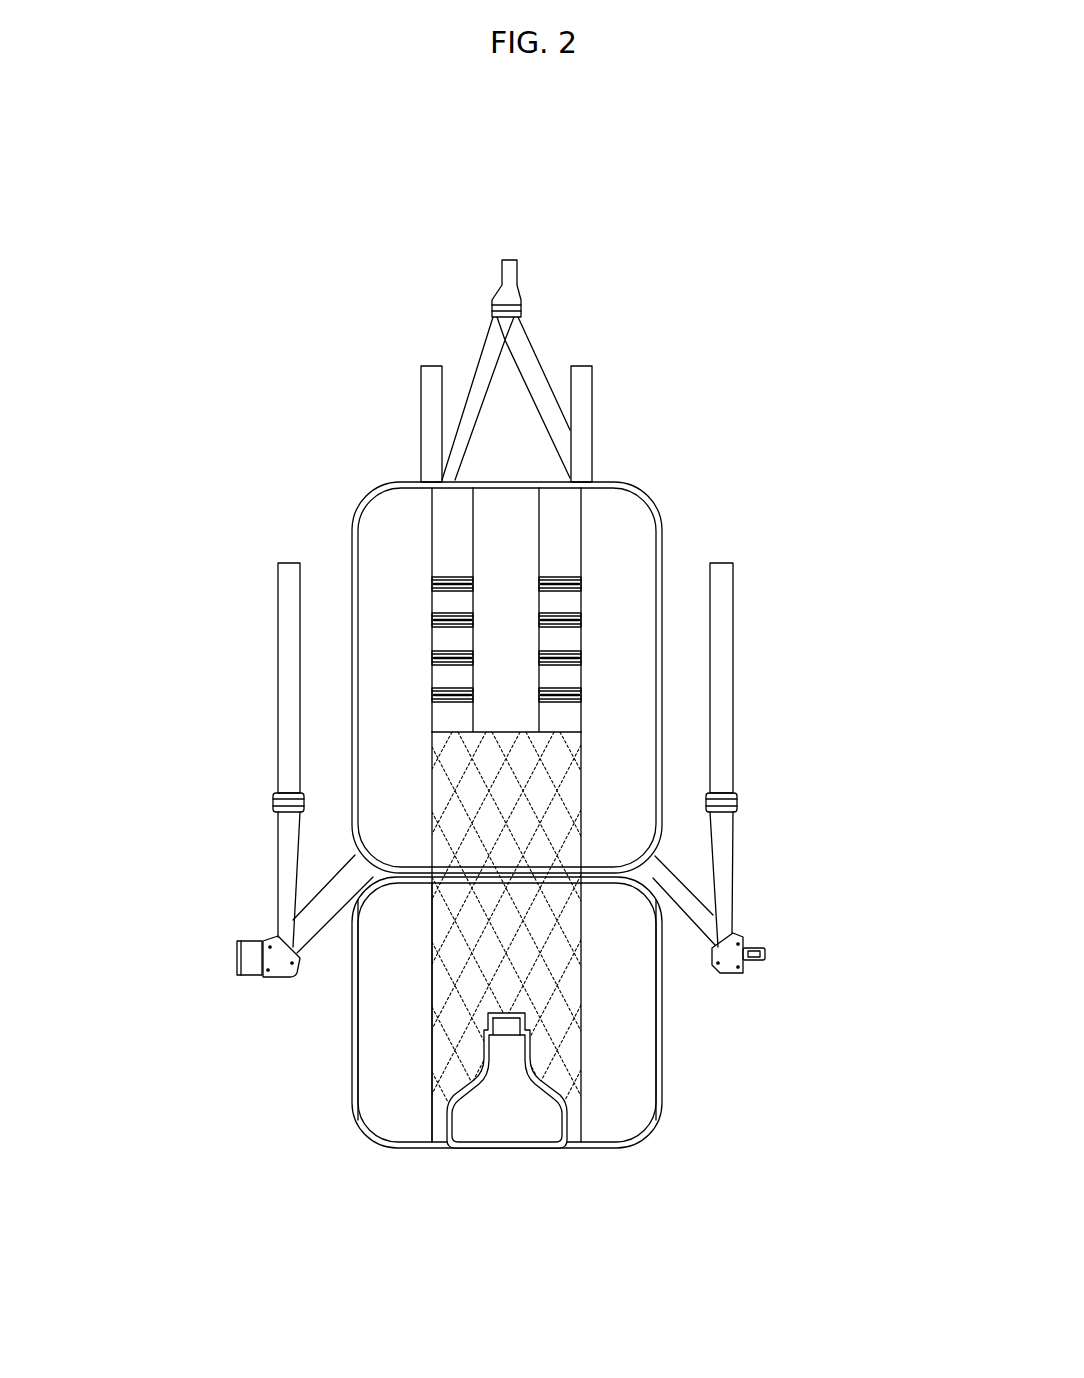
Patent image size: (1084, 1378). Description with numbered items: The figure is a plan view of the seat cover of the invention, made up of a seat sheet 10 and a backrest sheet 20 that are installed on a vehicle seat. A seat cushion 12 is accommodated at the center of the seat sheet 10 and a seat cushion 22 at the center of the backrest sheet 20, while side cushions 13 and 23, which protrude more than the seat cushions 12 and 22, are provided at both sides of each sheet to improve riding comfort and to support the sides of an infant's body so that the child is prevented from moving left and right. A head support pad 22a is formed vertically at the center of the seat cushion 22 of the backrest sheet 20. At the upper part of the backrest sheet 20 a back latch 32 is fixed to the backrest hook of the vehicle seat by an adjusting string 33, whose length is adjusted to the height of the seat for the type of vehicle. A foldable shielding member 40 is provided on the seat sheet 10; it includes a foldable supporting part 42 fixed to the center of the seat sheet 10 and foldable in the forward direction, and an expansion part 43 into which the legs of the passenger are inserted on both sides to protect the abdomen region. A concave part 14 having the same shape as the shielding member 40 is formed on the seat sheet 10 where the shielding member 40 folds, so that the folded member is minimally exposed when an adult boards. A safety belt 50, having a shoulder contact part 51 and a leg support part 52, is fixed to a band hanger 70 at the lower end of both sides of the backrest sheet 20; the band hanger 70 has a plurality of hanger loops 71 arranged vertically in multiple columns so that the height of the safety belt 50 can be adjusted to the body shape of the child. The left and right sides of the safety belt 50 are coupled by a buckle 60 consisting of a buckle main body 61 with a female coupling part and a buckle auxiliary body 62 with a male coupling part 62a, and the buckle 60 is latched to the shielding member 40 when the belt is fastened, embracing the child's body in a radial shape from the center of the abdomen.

The seat sheet 10 is at (646, 1140).
The seat cushion 12 is at (442, 948).
The side cushion 13 is at (388, 1035).
The concave part 14 is at (538, 1077).
The backrest sheet 20 is at (654, 492).
The seat cushion 22 is at (470, 790).
The head support pad 22a is at (513, 525).
The side cushion 23 is at (383, 660).
The back latch 32 is at (512, 265).
The adjusting string 33 is at (528, 366).
The shielding member 40 is at (507, 1154).
The foldable supporting part 42 is at (505, 1034).
The expansion part 43 is at (455, 1140).
The safety belt 50 is at (781, 755).
The shoulder contact part 51 is at (725, 750).
The leg support part 52 is at (684, 897).
The buckle 60 is at (152, 988).
The buckle main body 61 is at (237, 957).
The buckle auxiliary body 62 is at (740, 977).
The male coupling part 62a is at (767, 958).
The band hanger 70 is at (673, 579).
The hanger loops 71 is at (563, 700).